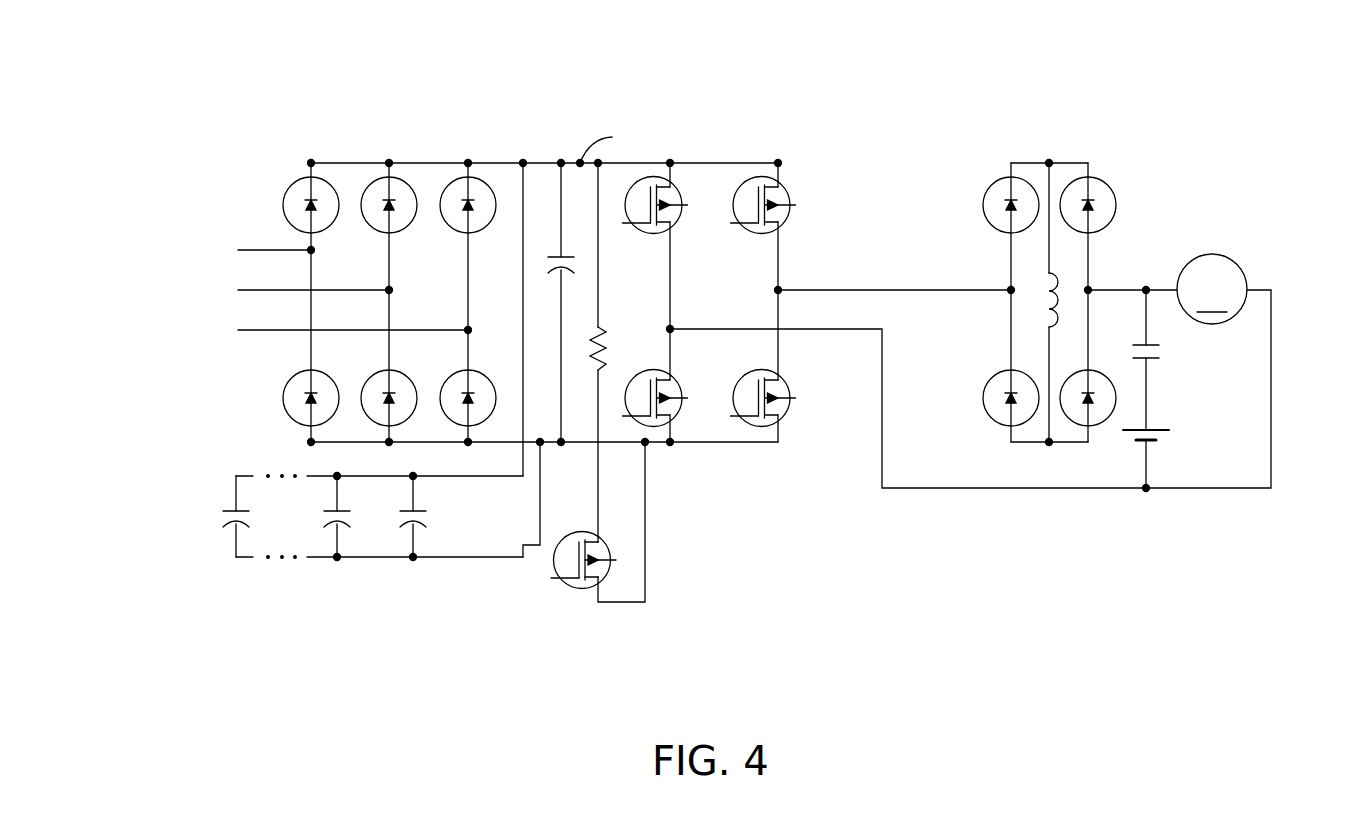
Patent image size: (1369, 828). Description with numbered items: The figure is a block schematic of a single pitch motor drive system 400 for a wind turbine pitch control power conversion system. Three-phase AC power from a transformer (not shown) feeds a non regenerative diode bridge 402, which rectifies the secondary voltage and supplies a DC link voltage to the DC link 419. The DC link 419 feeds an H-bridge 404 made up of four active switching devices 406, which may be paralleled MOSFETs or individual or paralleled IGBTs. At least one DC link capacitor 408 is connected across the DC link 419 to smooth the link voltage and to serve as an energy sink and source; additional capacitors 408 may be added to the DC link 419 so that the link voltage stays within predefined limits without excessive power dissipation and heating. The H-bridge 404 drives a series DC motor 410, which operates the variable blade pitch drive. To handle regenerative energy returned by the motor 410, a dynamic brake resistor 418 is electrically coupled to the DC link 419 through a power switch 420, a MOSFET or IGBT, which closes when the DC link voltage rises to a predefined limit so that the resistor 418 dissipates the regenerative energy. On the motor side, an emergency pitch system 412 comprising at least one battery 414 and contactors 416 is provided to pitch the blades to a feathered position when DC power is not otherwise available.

The single pitch motor drive system 400 is at (935, 75).
The non regenerative diode bridge 402 is at (446, 135).
The H-bridge 404 is at (752, 130).
The active switching devices 406 is at (648, 232).
The DC link capacitor 408 is at (565, 247).
The series DC motor 410 is at (1230, 253).
The emergency pitch system 412 is at (1185, 390).
The battery 414 is at (1162, 453).
The contactors 416 is at (1135, 337).
The dynamic brake resistor 418 is at (592, 357).
The DC link 419 is at (698, 163).
The power switch 420 is at (578, 593).